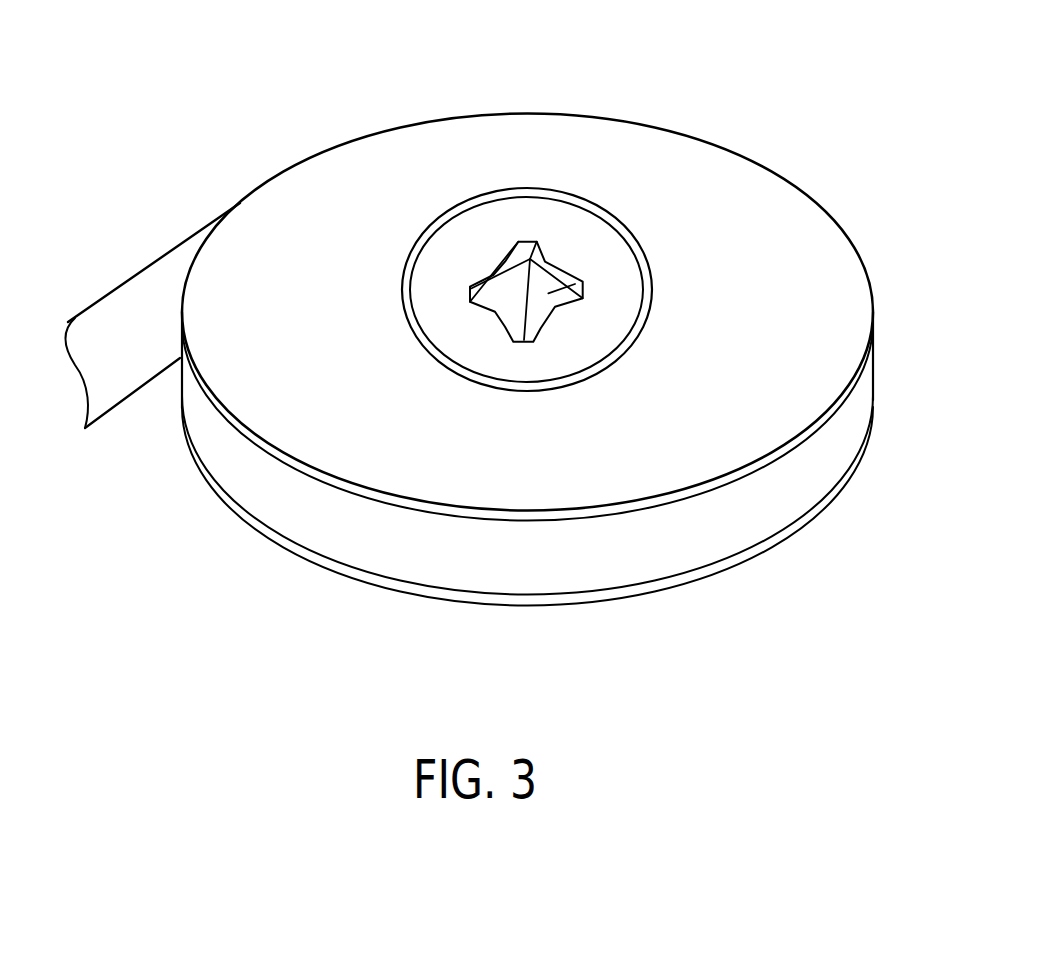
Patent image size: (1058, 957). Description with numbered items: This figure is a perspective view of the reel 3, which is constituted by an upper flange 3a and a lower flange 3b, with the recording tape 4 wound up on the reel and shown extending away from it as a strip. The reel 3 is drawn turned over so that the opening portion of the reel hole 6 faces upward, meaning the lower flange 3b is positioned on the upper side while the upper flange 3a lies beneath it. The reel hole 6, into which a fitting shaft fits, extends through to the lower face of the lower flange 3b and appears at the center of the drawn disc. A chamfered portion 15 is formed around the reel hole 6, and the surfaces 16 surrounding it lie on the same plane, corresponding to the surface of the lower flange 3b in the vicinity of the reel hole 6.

The reel 3 is at (822, 172).
The upper flange 3a is at (337, 570).
The lower flange 3b is at (268, 188).
The recording tape 4 is at (135, 365).
The reel hole 6 is at (583, 282).
The chamfered portion 15 is at (515, 253).
The surfaces 16 is at (567, 247).